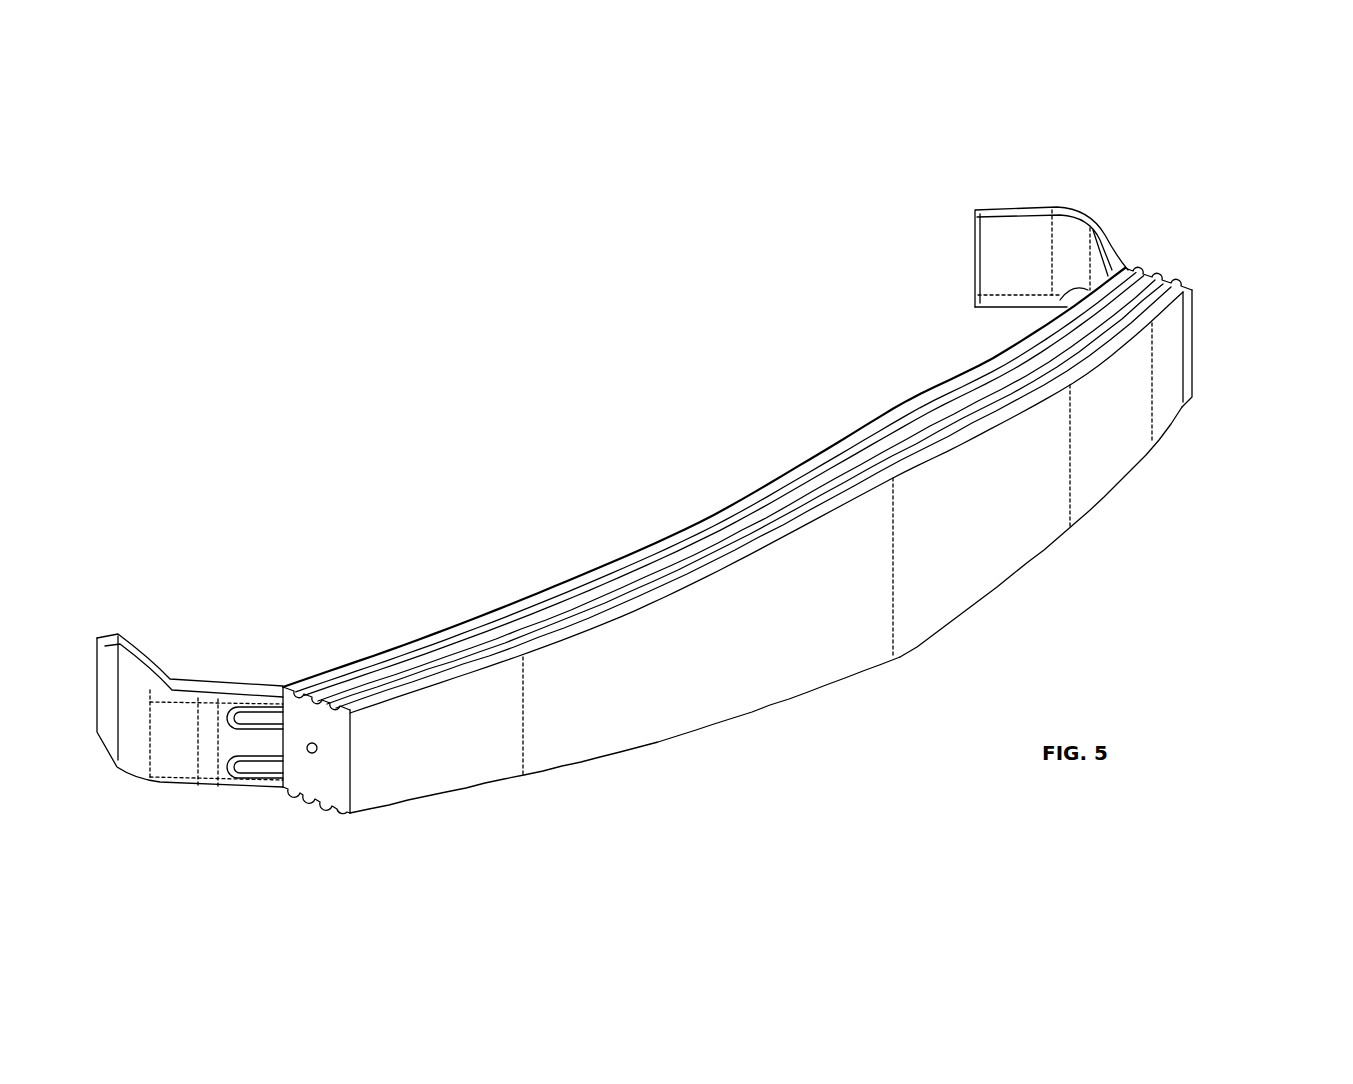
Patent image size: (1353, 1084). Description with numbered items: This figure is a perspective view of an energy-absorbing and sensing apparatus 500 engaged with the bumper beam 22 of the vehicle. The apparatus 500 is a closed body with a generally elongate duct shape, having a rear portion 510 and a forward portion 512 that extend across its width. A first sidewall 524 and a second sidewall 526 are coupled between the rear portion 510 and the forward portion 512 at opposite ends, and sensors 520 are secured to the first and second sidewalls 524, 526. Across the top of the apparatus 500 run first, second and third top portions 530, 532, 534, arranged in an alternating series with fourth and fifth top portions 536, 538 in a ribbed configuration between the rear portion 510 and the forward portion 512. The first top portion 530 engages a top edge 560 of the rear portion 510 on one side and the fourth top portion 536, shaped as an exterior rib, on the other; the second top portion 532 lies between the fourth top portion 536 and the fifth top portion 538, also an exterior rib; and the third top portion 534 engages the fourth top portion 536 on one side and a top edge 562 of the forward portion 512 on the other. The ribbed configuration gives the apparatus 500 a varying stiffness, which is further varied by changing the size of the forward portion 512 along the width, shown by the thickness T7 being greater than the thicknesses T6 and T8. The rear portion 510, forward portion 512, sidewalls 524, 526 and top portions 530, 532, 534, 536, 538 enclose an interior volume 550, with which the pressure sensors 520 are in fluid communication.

The bumper beam 22 is at (1035, 205).
The energy-absorbing and sensing apparatus 500 is at (755, 562).
The rear portion 510 is at (280, 740).
The forward portion 512 is at (766, 568).
The sensors 520 is at (310, 743).
The first sidewall 524 is at (297, 734).
The second sidewall 526 is at (1193, 352).
The first top portion 530 is at (542, 605).
The second top portion 532 is at (587, 603).
The third top portion 534 is at (628, 600).
The fourth top portion 536 is at (717, 532).
The fifth top portion 538 is at (753, 532).
The interior volume 550 is at (818, 766).
The top edge of the rear portion 560 is at (820, 455).
The top edge of the forward portion 562 is at (830, 507).
The thickness T6 is at (423, 833).
The thickness T7 is at (903, 688).
The thickness T8 is at (1182, 440).